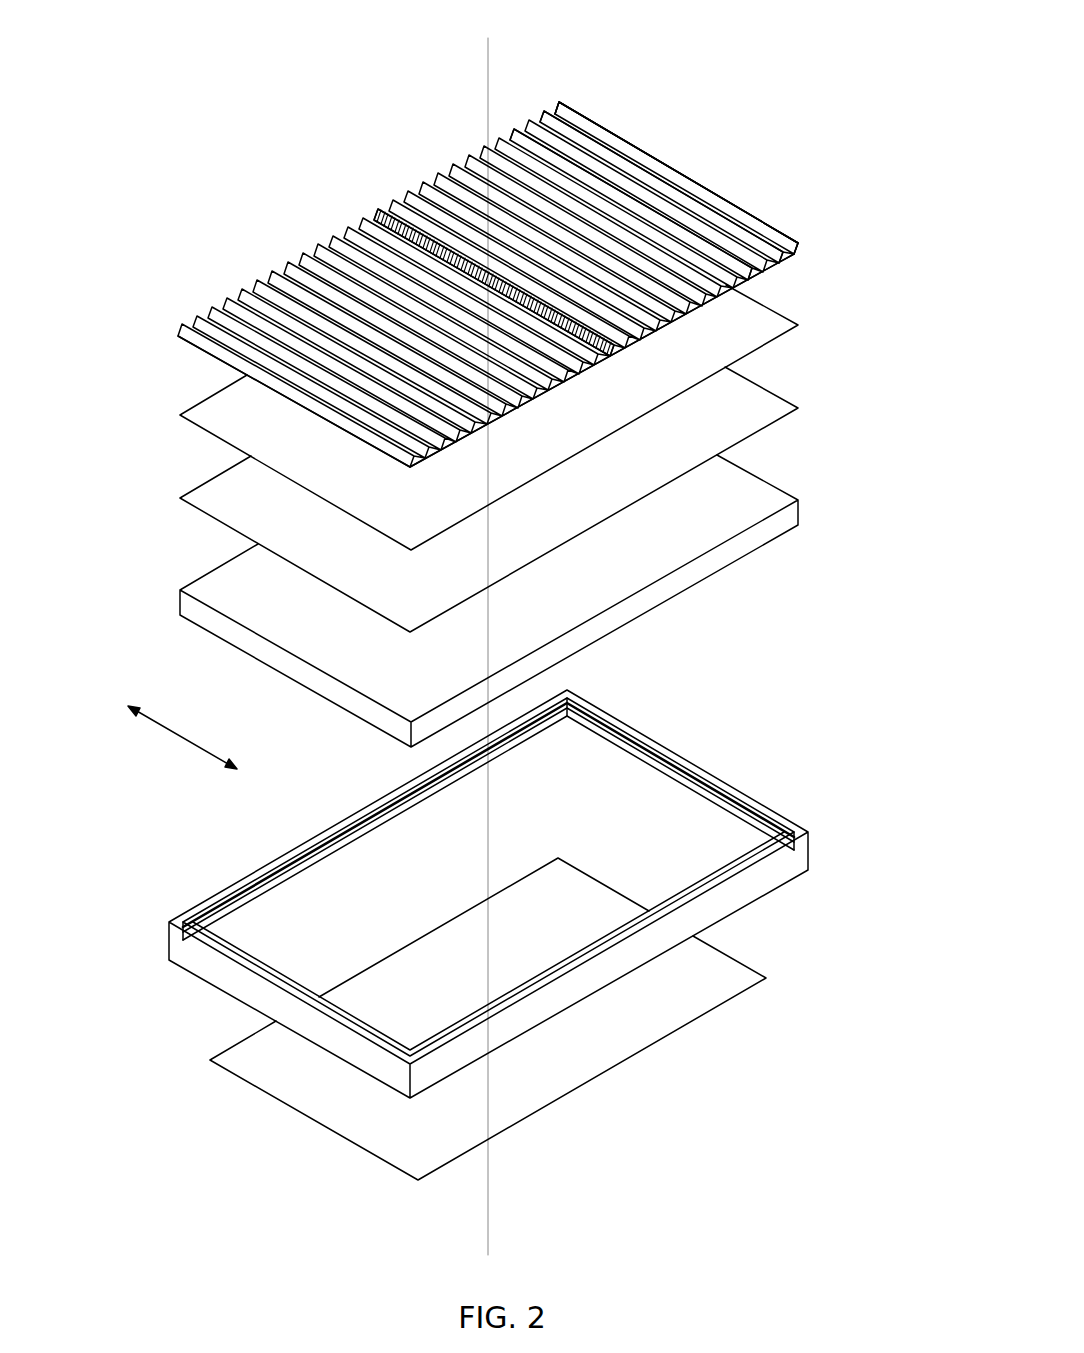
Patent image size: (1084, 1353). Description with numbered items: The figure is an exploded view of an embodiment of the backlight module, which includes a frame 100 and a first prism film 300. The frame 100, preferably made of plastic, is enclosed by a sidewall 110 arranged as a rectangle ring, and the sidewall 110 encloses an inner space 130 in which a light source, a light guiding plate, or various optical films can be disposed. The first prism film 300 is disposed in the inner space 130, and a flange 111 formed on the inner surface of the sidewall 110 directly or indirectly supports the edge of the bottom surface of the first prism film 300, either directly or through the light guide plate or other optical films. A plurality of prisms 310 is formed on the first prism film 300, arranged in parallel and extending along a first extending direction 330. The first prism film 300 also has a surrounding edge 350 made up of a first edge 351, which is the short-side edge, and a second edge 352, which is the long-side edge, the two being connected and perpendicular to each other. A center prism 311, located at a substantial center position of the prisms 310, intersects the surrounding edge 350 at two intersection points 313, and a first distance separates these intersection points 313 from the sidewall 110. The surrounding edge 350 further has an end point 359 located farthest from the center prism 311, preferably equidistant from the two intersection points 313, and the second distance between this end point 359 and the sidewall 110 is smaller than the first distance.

The frame 100 is at (760, 877).
The sidewall 110 is at (733, 807).
The flange 111 is at (750, 833).
The inner space 130 is at (633, 803).
The first prism film 300 is at (770, 218).
The prisms 310 is at (722, 264).
The center prism 311 is at (420, 232).
The intersection points 313 is at (377, 208).
The first extending direction 330 is at (182, 737).
The surrounding edge 350 is at (545, 36).
The first edge 351 is at (612, 125).
The second edge 352 is at (510, 128).
The end point 359 is at (677, 167).